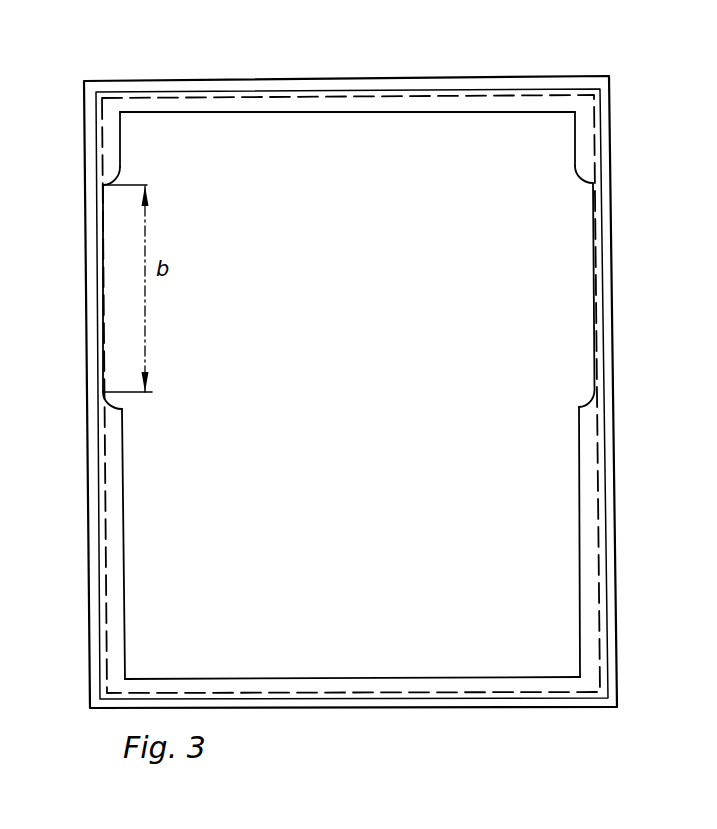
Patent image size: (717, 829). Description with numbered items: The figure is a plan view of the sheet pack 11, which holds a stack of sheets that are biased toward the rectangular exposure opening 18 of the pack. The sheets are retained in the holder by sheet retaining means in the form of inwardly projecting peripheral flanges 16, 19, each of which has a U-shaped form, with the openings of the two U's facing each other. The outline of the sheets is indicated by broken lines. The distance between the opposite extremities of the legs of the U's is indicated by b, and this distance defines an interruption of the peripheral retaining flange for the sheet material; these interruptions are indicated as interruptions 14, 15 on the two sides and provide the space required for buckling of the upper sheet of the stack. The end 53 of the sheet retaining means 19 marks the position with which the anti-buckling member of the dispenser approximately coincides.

The sheet pack 11 is at (216, 64).
The interruption of the peripheral retaining flange 14 is at (114, 239).
The interruption of the peripheral retaining flange 15 is at (580, 252).
The inwardly projecting peripheral flange 16 is at (410, 105).
The rectangular exposure opening 18 is at (309, 157).
The inwardly projecting peripheral flange 19 is at (394, 685).
The end of the sheet retaining means 53 is at (113, 390).